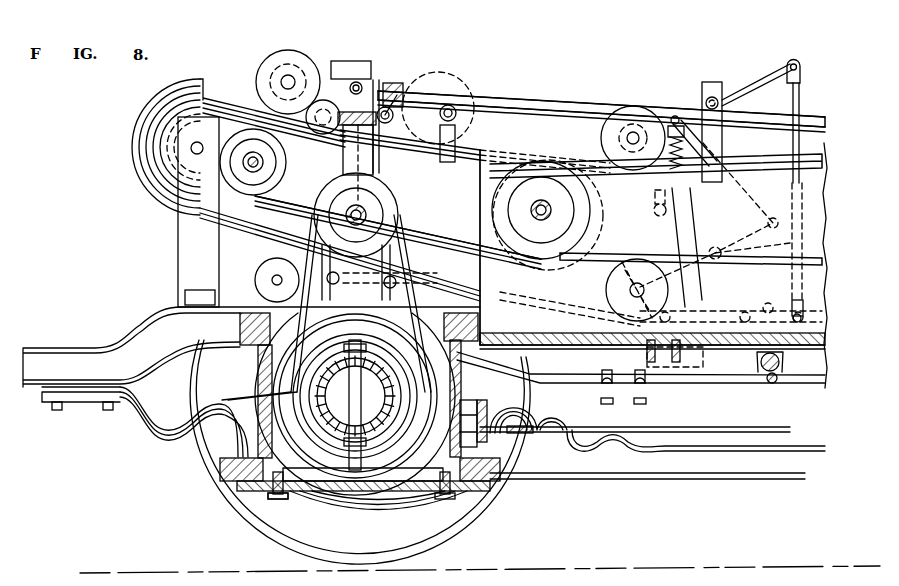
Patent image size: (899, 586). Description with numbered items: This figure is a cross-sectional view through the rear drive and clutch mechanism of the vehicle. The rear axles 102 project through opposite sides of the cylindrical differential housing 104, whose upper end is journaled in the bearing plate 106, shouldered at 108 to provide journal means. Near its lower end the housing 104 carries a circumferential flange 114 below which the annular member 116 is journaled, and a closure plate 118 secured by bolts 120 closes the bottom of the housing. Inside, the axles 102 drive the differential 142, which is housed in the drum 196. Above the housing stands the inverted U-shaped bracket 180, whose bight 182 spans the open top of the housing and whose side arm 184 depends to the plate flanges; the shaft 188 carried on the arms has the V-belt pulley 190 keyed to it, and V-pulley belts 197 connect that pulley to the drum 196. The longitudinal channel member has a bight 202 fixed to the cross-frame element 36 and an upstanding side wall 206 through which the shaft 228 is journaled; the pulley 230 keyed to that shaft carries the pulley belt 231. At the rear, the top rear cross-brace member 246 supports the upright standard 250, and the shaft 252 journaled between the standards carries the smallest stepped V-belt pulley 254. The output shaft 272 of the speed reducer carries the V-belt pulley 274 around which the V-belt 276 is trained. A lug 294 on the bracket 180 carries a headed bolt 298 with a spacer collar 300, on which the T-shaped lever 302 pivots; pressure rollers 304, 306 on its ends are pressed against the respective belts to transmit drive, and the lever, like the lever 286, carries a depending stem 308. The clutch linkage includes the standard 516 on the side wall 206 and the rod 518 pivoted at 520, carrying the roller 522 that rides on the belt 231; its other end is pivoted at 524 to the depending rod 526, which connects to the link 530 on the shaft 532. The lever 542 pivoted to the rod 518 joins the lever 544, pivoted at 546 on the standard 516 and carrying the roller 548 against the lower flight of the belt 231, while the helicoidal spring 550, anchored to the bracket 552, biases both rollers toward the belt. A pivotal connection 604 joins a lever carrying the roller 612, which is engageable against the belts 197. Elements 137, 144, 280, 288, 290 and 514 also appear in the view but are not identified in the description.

The cross-frame element 36 is at (647, 355).
The rear axle 102 is at (272, 392).
The differential housing 104 is at (252, 372).
The bearing plate 106 is at (243, 335).
The shoulder 108 is at (430, 318).
The circumferential flange 114 is at (220, 463).
The annular member 116 is at (222, 478).
The closure plate 118 is at (250, 491).
The bolt 120 is at (276, 500).
The frame arm 137 is at (150, 438).
The differential 142 is at (338, 346).
The bearing 144 is at (395, 440).
The inverted U-shaped bracket 180 is at (337, 164).
The bight 182 is at (359, 82).
The side arm 184 is at (374, 158).
The shaft 188 is at (385, 210).
The V-belt pulley 190 is at (395, 230).
The drum 196 is at (395, 345).
The V-pulley belt 197 is at (405, 273).
The bight 202 is at (577, 337).
The side wall 206 is at (577, 153).
The shaft 228 is at (548, 221).
The pulley 230 is at (590, 208).
The pulley belt 231 is at (700, 215).
The top rear cross-brace member 246 is at (185, 298).
The standard 250 is at (178, 225).
The shaft 252 is at (199, 143).
The stepped V-belt pulley 254 is at (177, 137).
The output shaft 272 is at (252, 157).
The V-belt pulley 274 is at (275, 186).
The V-belt 276 is at (450, 240).
The link 280 is at (366, 84).
The lever 286 is at (345, 61).
The pulley 288 is at (268, 66).
The pulley 290 is at (452, 75).
The lug 294 is at (398, 85).
The headed bolt 298 is at (392, 108).
The spacer collar 300 is at (456, 131).
The T-shaped lever 302 is at (457, 113).
The pressure roller 304 is at (472, 96).
The pressure roller 306 is at (325, 100).
The depending stem 308 is at (440, 152).
The spring assembly 514 is at (660, 95).
The standard 516 is at (722, 84).
The rod 518 is at (750, 73).
The pivotal connection 520 is at (703, 86).
The roller 522 is at (620, 110).
The pivotal connection 524 is at (797, 60).
The depending rod 526 is at (800, 107).
The link 530 is at (781, 359).
The shaft 532 is at (779, 380).
The lever 542 is at (773, 216).
The lever 544 is at (736, 237).
The pivot 546 is at (720, 260).
The roller 548 is at (606, 288).
The helicoidal spring 550 is at (710, 160).
The bracket 552 is at (703, 355).
The pivotal connection 604 is at (272, 280).
The roller 612 is at (268, 265).